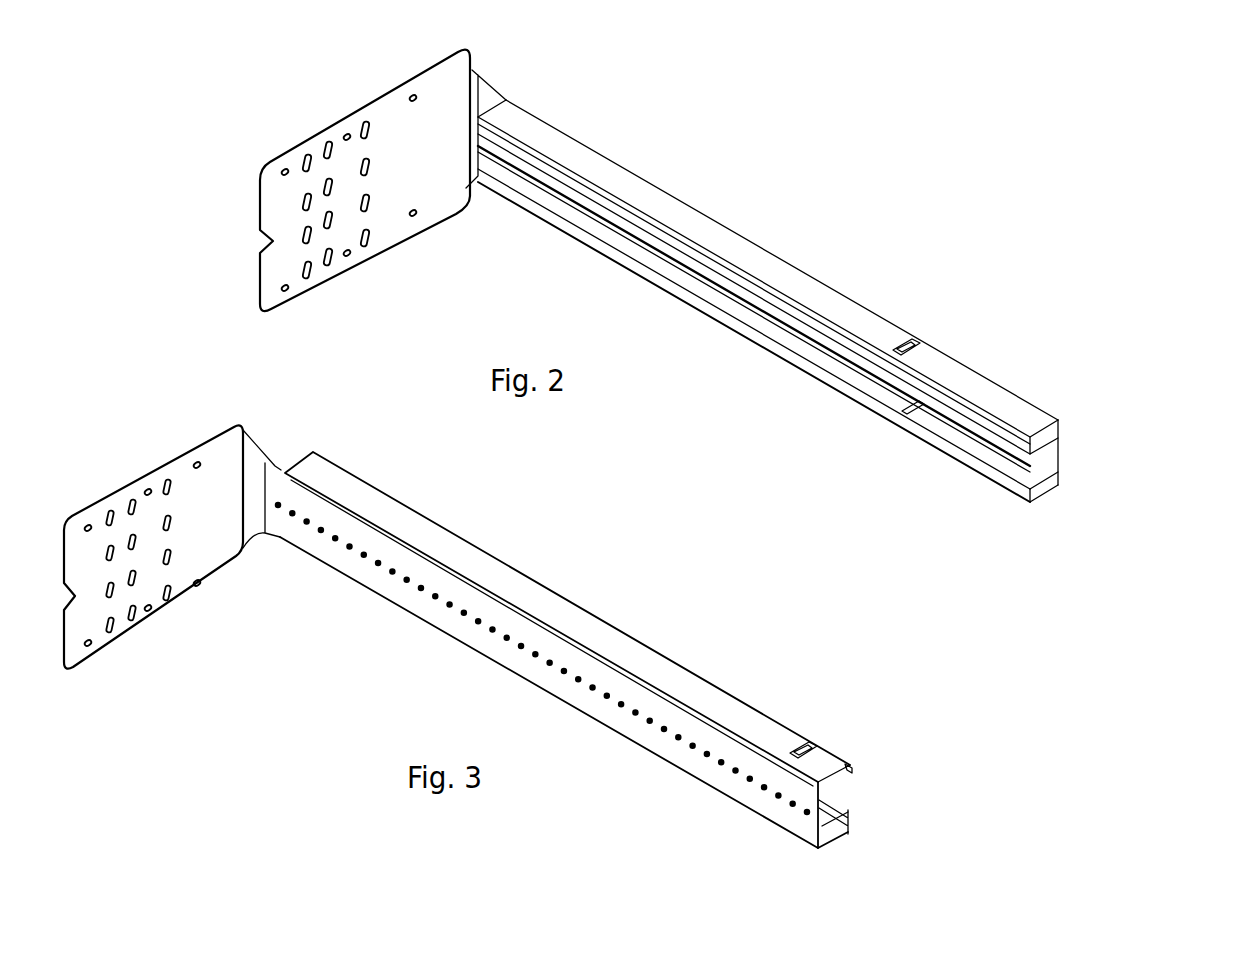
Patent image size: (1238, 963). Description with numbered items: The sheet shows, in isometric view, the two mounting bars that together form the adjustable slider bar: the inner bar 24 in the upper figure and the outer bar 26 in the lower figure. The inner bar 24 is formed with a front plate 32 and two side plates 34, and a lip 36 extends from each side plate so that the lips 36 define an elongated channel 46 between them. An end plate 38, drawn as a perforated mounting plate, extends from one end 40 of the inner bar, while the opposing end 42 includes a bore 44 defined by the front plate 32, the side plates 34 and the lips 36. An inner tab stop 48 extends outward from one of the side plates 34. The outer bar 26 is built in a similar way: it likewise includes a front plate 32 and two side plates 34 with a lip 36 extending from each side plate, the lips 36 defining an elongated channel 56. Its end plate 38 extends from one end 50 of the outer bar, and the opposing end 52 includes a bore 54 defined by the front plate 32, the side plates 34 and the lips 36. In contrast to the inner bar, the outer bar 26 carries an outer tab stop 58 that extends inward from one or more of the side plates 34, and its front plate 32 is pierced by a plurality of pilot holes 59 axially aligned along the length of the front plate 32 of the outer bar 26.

In FIG. 2, the inner bar 24 is at (818, 296).
In FIG. 3, the outer bar 26 is at (628, 625).
In FIG. 2, the front plate 32 is at (1048, 455).
In FIG. 3, the front plate 32 is at (548, 685).
In FIG. 2, the side plates 34 is at (750, 258).
In FIG. 3, the side plates 34 is at (655, 668).
In FIG. 2, the lip 36 is at (1025, 492).
In FIG. 3, the lip 36 is at (850, 820).
In FIG. 2, the end plate 38 is at (446, 171).
In FIG. 3, the end plate 38 is at (226, 531).
In FIG. 2, the end 40 is at (506, 99).
In FIG. 2, the opposing end 42 is at (1055, 420).
In FIG. 2, the bore 44 is at (1058, 465).
In FIG. 2, the elongated channel 46 is at (558, 185).
In FIG. 2, the inner tab stop 48 is at (915, 345).
In FIG. 3, the end 50 is at (265, 457).
In FIG. 3, the opposing end 52 is at (848, 760).
In FIG. 3, the bore 54 is at (848, 834).
In FIG. 3, the elongated channel 56 is at (852, 797).
In FIG. 3, the outer tab stop 58 is at (800, 742).
In FIG. 3, the pilot holes 59 is at (420, 595).